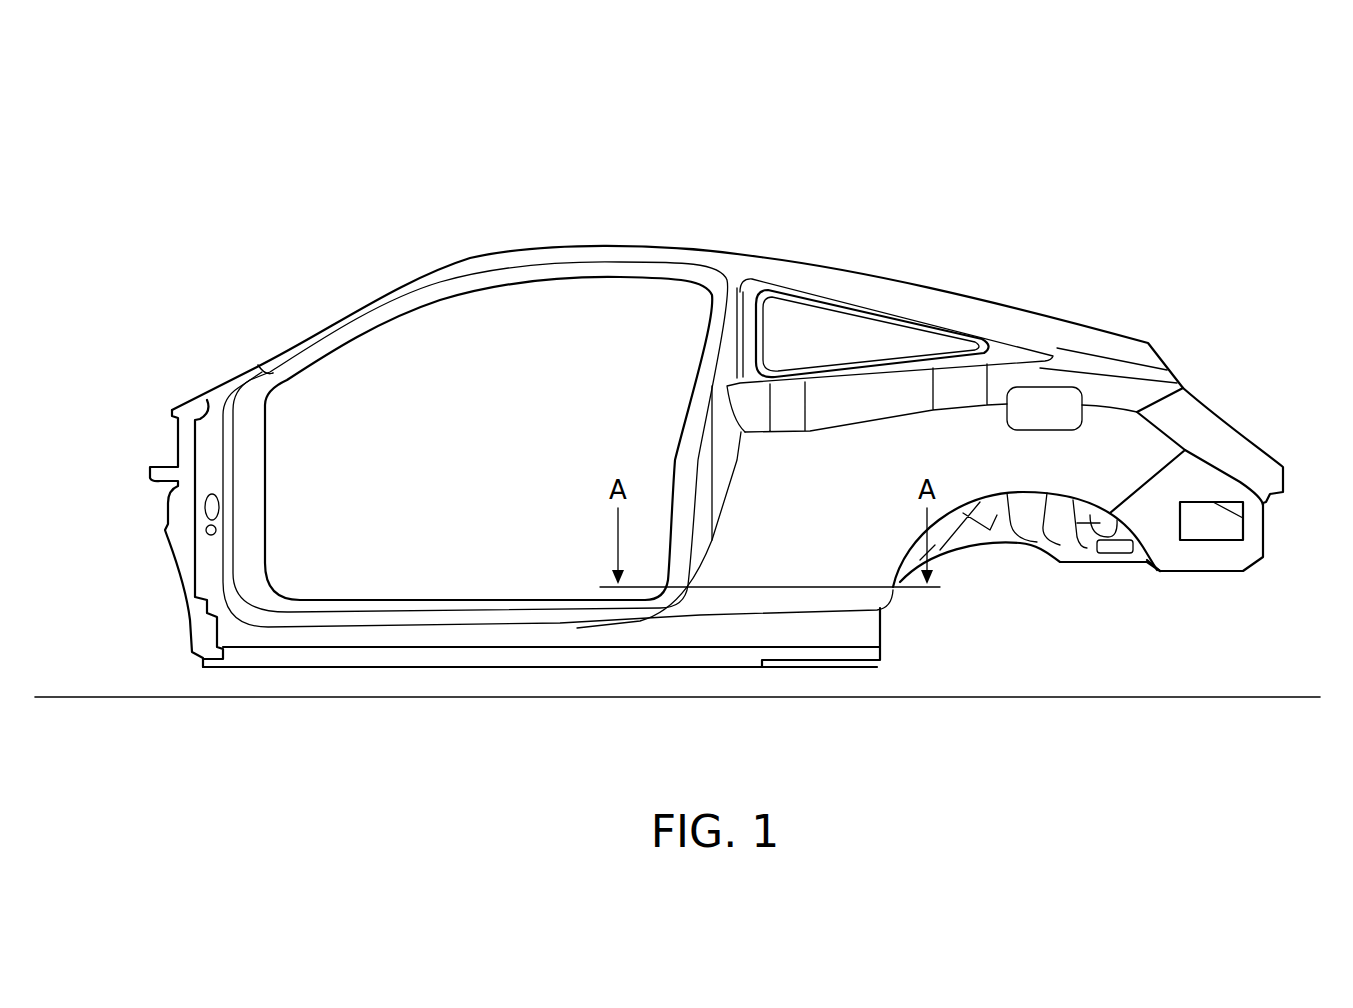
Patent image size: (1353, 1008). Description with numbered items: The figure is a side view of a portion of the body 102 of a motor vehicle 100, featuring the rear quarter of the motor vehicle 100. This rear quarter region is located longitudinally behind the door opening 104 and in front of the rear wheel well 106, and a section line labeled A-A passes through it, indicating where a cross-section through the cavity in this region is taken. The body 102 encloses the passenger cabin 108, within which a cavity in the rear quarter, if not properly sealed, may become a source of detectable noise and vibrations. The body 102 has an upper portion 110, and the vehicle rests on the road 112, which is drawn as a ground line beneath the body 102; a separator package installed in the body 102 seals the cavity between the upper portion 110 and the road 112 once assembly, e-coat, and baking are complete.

The motor vehicle 100 is at (716, 456).
The body 102 is at (1087, 362).
The door opening 104 is at (594, 352).
The rear wheel well 106 is at (1020, 548).
The passenger cabin 108 is at (370, 362).
The upper portion 110 is at (787, 400).
The road 112 is at (1310, 684).